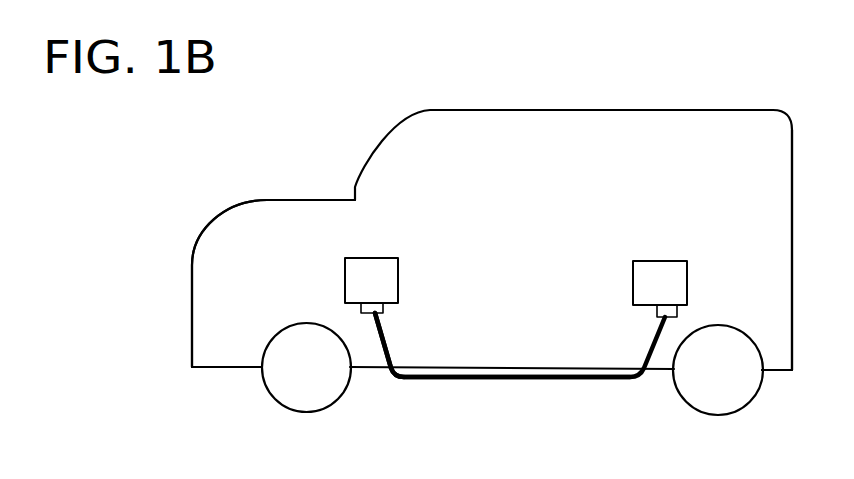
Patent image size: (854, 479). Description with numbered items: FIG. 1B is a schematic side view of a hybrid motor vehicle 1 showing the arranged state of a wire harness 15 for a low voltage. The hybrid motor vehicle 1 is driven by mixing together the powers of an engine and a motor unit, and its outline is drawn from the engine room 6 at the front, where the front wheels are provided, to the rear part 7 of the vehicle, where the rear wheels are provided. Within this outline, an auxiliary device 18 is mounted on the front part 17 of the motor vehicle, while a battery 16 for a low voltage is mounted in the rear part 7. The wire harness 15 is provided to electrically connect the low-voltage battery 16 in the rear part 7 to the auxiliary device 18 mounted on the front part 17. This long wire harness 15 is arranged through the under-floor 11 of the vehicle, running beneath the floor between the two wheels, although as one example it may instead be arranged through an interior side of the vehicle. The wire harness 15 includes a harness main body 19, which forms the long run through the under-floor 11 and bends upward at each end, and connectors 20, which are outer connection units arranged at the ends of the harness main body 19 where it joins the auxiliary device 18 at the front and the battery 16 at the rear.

The hybrid motor vehicle 1 is at (645, 106).
The engine room 6 is at (208, 342).
The rear part 7 is at (772, 338).
The under-floor 11 is at (590, 374).
The wire harness 15 is at (427, 390).
The battery 16 is at (661, 270).
The front part 17 is at (327, 215).
The auxiliary device 18 is at (385, 270).
The harness main body 19 is at (398, 356).
The connectors 20 is at (383, 308).